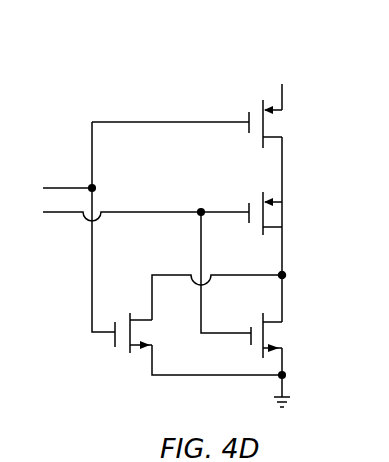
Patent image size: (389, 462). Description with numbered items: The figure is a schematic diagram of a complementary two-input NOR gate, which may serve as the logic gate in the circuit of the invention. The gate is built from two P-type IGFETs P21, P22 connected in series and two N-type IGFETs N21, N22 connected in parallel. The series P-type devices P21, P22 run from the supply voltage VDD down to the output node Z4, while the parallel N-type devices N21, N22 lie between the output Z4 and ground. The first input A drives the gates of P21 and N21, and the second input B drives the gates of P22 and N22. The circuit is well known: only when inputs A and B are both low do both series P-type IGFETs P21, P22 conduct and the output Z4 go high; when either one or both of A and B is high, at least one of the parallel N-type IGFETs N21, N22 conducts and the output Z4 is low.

The P-type IGFET P21 is at (279, 124).
The P-type IGFET P22 is at (255, 213).
The N-type IGFET N21 is at (146, 333).
The N-type IGFET N22 is at (280, 335).
The output Z4 is at (282, 275).
The input A is at (61, 183).
The input B is at (114, 213).
The supply voltage VDD is at (289, 88).